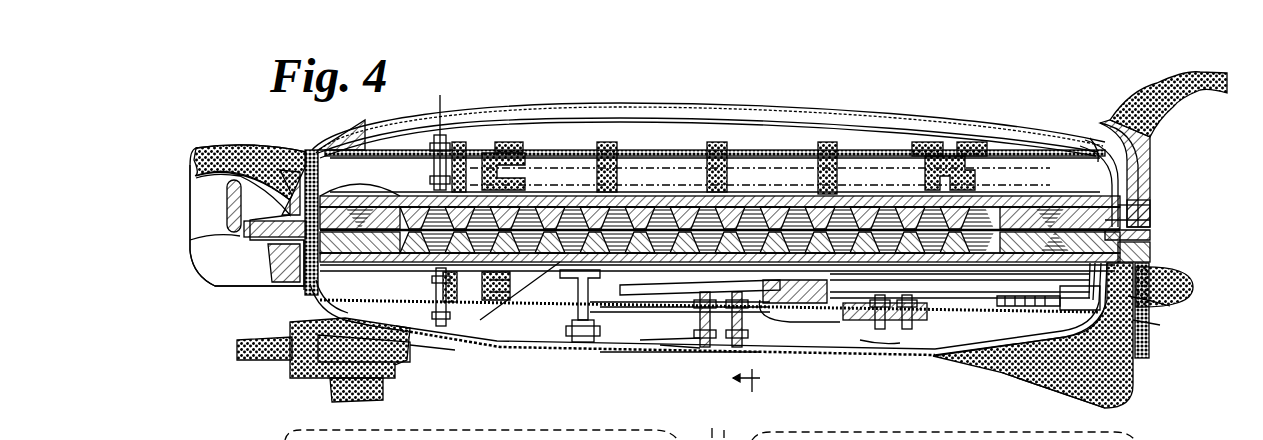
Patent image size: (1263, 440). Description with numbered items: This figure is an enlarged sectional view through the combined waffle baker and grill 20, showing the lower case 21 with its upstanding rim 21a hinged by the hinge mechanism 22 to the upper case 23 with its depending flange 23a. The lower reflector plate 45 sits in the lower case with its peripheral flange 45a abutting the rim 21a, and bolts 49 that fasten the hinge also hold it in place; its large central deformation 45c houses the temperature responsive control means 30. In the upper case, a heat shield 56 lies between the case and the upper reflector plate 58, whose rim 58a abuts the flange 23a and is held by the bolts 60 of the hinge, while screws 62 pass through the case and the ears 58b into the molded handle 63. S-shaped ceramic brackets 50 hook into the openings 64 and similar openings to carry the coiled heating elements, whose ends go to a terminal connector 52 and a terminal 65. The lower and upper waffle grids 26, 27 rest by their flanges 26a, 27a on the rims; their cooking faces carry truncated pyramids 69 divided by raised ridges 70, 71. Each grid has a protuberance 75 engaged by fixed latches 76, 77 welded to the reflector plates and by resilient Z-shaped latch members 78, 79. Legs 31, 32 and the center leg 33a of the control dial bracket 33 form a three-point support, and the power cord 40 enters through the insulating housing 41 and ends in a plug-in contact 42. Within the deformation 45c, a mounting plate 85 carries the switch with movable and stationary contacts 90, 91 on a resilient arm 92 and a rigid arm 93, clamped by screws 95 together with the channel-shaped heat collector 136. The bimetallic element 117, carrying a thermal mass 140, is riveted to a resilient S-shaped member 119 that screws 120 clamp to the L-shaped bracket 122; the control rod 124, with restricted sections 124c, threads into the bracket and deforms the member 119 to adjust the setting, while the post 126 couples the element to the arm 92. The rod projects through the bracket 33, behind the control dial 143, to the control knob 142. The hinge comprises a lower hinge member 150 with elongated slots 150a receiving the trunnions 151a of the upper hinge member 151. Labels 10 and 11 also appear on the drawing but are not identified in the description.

The bolt / fastener axis 10 is at (432, 183).
The section line 11 is at (750, 383).
The combined waffle baker and grill 20 is at (535, 371).
The lower case 21 is at (872, 342).
The upstanding peripheral wall portion 21a is at (305, 287).
The hinge mechanism 22 is at (192, 268).
The upper case 23 is at (612, 104).
The depending peripheral flange 23a is at (1148, 170).
The lower waffle grid 26 is at (980, 264).
The peripheral flange of lower grid 26a is at (1150, 232).
The upper waffle grid 27 is at (1000, 240).
The peripheral flange of upper grid 27a is at (1150, 222).
The temperature responsive control means 30 is at (700, 359).
The leg 31 is at (408, 343).
The leg 32 is at (385, 392).
The control dial bracket 33 is at (1135, 370).
The center leg 33a is at (1110, 405).
The power cord 40 is at (250, 333).
The insulating housing 41 is at (425, 368).
The plug-in type contact 42 is at (710, 429).
The reflector plate 45 is at (408, 302).
The upwardly extending peripheral flange 45a is at (318, 296).
The large central deformation 45c is at (1068, 300).
The bolts 49 is at (290, 258).
The S-shaped ceramic brackets 50 is at (500, 143).
The terminal connector 52 is at (455, 313).
The heat shield 56 is at (762, 119).
The reflector plate 58 is at (876, 152).
The peripheral rim 58a is at (312, 152).
The integral ears 58b is at (1088, 140).
The bolts 60 is at (298, 187).
The screws 62 is at (1068, 137).
The handle 63 is at (1190, 72).
The rectangular openings 64 is at (983, 150).
The terminal 65 is at (448, 135).
The truncated pyramids 69 is at (690, 230).
The raised ridge 70 is at (750, 245).
The raised ridge 71 is at (405, 190).
The protuberance 75 is at (328, 200).
The fixed latch 76 is at (1150, 248).
The fixed latch 77 is at (1150, 212).
The movable latch member 78 is at (292, 236).
The movable latch member 79 is at (268, 196).
The mounting plate 85 is at (845, 320).
The movable contact 90 is at (638, 332).
The stationary contact 91 is at (665, 305).
The resilient contact arm 92 is at (668, 347).
The rigid conducting arm 93 is at (655, 345).
The screws 95 is at (765, 287).
The bimetallic element 117 is at (700, 272).
The resilient S-shaped member 119 is at (875, 322).
The screws 120 is at (905, 340).
The L-shaped control rod mounting bracket 122 is at (945, 315).
The manually adjustable control rod 124 is at (1030, 292).
The sections of restricted cross section 124c is at (1175, 306).
The interconnecting rod 126 is at (585, 291).
The channel-shaped heat collector 136 is at (545, 287).
The thermal mass 140 is at (830, 308).
The control knob 142 is at (1192, 289).
The control dial 143 is at (1162, 325).
The lower hinge member 150 is at (192, 238).
The elongated slots 150a is at (238, 200).
The upper hinge member 151 is at (192, 160).
The trunnions 151a is at (228, 216).